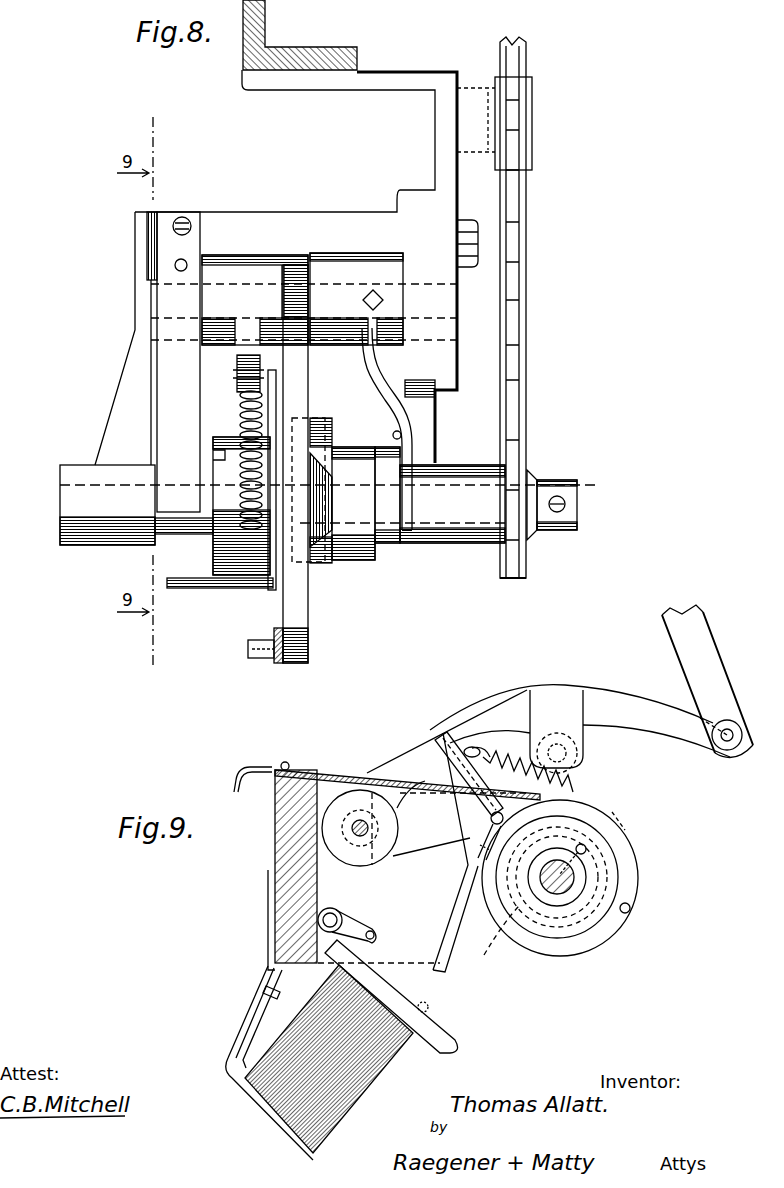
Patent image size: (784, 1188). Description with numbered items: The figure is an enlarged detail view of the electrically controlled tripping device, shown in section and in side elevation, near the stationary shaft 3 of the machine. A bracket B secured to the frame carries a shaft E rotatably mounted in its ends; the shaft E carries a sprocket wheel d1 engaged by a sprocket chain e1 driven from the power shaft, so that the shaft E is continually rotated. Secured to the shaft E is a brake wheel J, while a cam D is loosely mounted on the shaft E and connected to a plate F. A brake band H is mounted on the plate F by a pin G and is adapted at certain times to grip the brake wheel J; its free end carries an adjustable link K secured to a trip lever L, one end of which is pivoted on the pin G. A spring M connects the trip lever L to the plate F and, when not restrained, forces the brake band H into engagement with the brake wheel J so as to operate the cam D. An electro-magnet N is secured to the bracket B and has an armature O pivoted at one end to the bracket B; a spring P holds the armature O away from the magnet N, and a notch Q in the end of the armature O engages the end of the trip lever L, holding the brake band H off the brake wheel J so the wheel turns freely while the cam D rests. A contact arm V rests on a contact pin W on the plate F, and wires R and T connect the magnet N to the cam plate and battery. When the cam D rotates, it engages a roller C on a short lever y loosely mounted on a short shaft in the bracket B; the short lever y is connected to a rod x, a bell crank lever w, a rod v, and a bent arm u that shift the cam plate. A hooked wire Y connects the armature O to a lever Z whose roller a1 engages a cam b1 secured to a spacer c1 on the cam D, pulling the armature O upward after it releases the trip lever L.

In FIG. 8, the bracket B is at (334, 212).
In FIG. 9, the bracket B is at (308, 884).
In FIG. 8, the bent arm u is at (185, 207).
In FIG. 9, the bent arm u is at (234, 780).
In FIG. 8, the contact arm V is at (178, 362).
In FIG. 8, the stationary shaft 3 is at (320, 320).
In FIG. 9, the stationary shaft 3 is at (358, 822).
In FIG. 8, the spring M is at (240, 418).
In FIG. 9, the spring M is at (515, 755).
In FIG. 8, the cam D is at (320, 418).
In FIG. 9, the cam D is at (605, 815).
In FIG. 8, the roller C is at (332, 470).
In FIG. 9, the roller C is at (585, 772).
In FIG. 8, the cam b1 is at (393, 438).
In FIG. 8, the hooked wire Y is at (408, 440).
In FIG. 9, the hooked wire Y is at (455, 900).
In FIG. 8, the sprocket chain e1 is at (527, 360).
In FIG. 8, the shaft E is at (578, 505).
In FIG. 9, the shaft E is at (575, 877).
In FIG. 8, the brake band H is at (213, 550).
In FIG. 9, the brake band H is at (590, 935).
In FIG. 8, the bell crank lever w is at (200, 588).
In FIG. 8, the plate F is at (272, 592).
In FIG. 9, the plate F is at (630, 840).
In FIG. 8, the short lever y is at (305, 600).
In FIG. 9, the short lever y is at (510, 705).
In FIG. 8, the rod x is at (274, 655).
In FIG. 9, the rod x is at (668, 650).
In FIG. 8, the spacer c1 is at (356, 560).
In FIG. 9, the spacer c1 is at (500, 930).
In FIG. 8, the roller a1 is at (387, 543).
In FIG. 9, the roller a1 is at (622, 840).
In FIG. 8, the lever Z is at (413, 535).
In FIG. 9, the lever Z is at (410, 845).
In FIG. 8, the sprocket wheel d1 is at (518, 565).
In FIG. 9, the trip lever L is at (443, 736).
In FIG. 9, the pin G is at (490, 816).
In FIG. 9, the adjustable link K is at (478, 836).
In FIG. 9, the contact pin W is at (631, 909).
In FIG. 9, the spring P is at (360, 918).
In FIG. 9, the armature O is at (378, 944).
In FIG. 9, the brake wheel J is at (557, 940).
In FIG. 9, the notch Q is at (450, 1020).
In FIG. 9, the rod v is at (249, 1006).
In FIG. 9, the wire T is at (250, 1044).
In FIG. 9, the wire R is at (238, 1048).
In FIG. 9, the electro-magnet N is at (375, 1072).